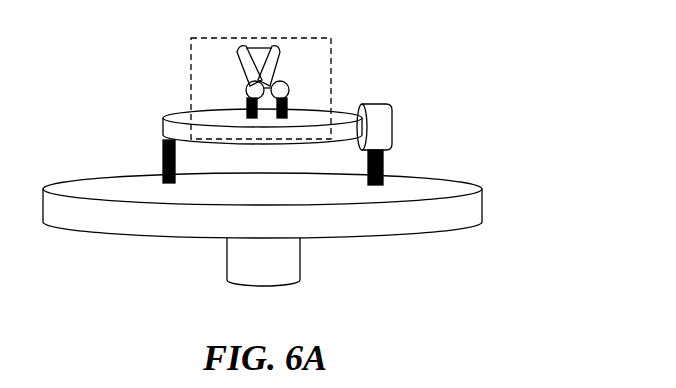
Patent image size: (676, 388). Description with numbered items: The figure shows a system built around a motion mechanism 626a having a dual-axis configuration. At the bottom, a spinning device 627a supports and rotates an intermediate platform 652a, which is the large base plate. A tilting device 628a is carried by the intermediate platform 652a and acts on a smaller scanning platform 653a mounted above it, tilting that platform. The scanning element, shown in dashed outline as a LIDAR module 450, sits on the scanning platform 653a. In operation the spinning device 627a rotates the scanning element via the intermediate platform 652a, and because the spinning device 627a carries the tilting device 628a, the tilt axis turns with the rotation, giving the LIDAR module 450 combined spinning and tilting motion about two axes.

The motion mechanism 626a is at (309, 168).
The intermediate platform 652a is at (450, 218).
The spinning device 627a is at (282, 265).
The scanning platform 653a is at (163, 137).
The tilting device 628a is at (380, 117).
The LIDAR module 450 is at (303, 37).